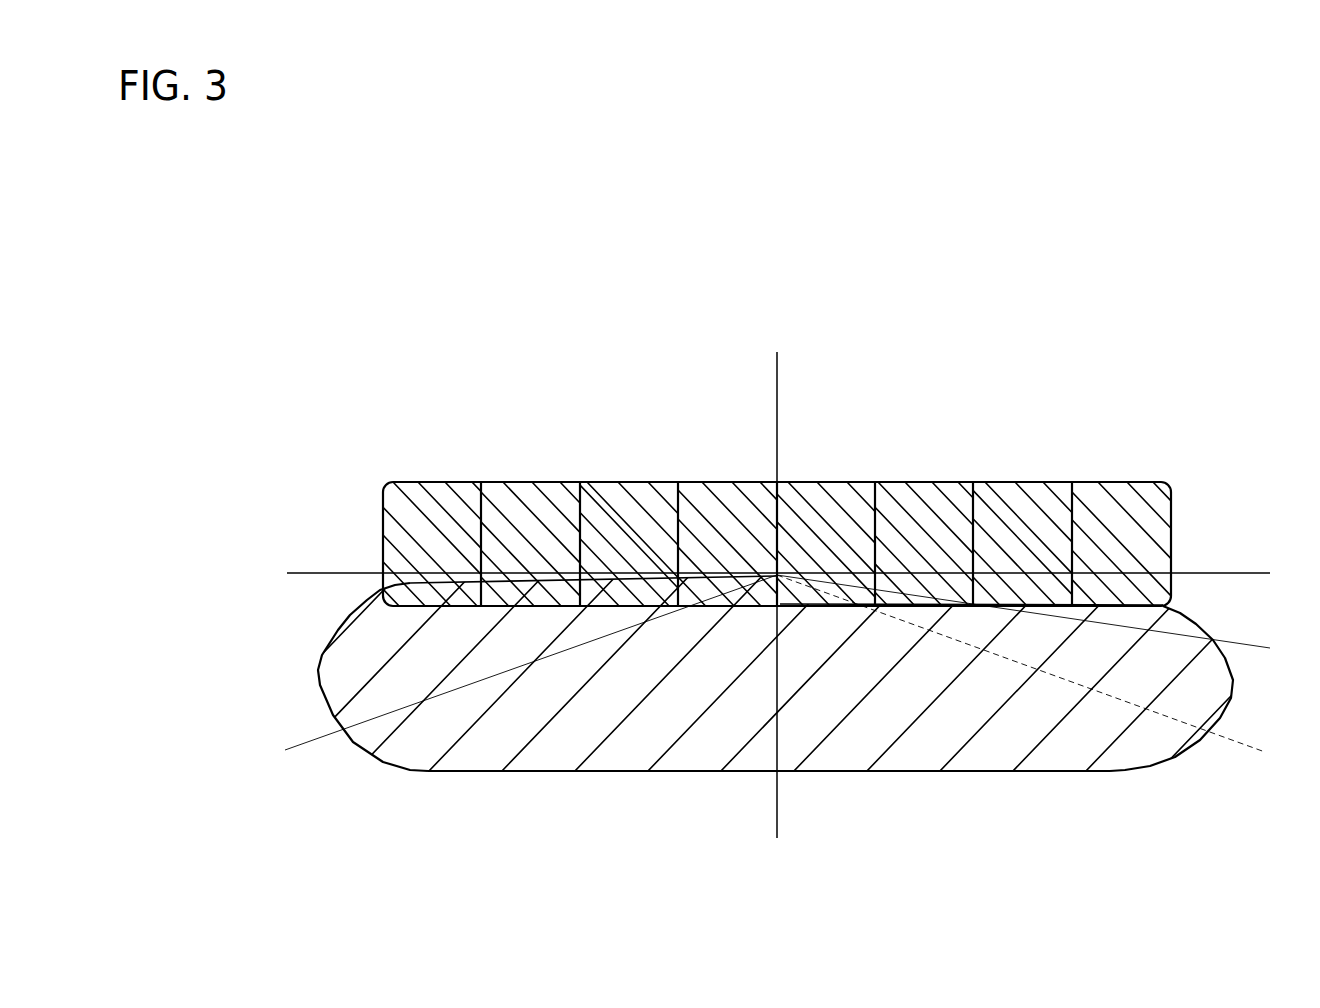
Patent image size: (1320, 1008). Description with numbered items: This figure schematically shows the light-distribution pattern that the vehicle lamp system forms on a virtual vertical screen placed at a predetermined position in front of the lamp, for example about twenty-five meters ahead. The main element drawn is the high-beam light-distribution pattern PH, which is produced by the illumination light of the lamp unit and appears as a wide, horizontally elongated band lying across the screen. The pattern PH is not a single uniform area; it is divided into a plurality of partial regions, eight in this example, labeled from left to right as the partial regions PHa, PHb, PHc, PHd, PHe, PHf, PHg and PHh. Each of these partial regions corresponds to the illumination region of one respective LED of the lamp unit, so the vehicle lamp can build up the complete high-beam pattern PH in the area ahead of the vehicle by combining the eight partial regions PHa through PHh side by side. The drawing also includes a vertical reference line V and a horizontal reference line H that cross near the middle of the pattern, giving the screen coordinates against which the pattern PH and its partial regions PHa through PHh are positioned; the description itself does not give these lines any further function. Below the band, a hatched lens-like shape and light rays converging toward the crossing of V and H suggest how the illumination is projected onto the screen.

The light-distribution pattern PH is at (393, 258).
The partial region PHa is at (432, 497).
The partial region PHb is at (532, 497).
The partial region PHc is at (634, 497).
The partial region PHd is at (733, 497).
The partial region PHe is at (832, 497).
The partial region PHf is at (931, 447).
The partial region PHg is at (1031, 497).
The partial region PHh is at (1131, 497).
The vertical axis V is at (777, 596).
The horizontal axis H is at (780, 574).